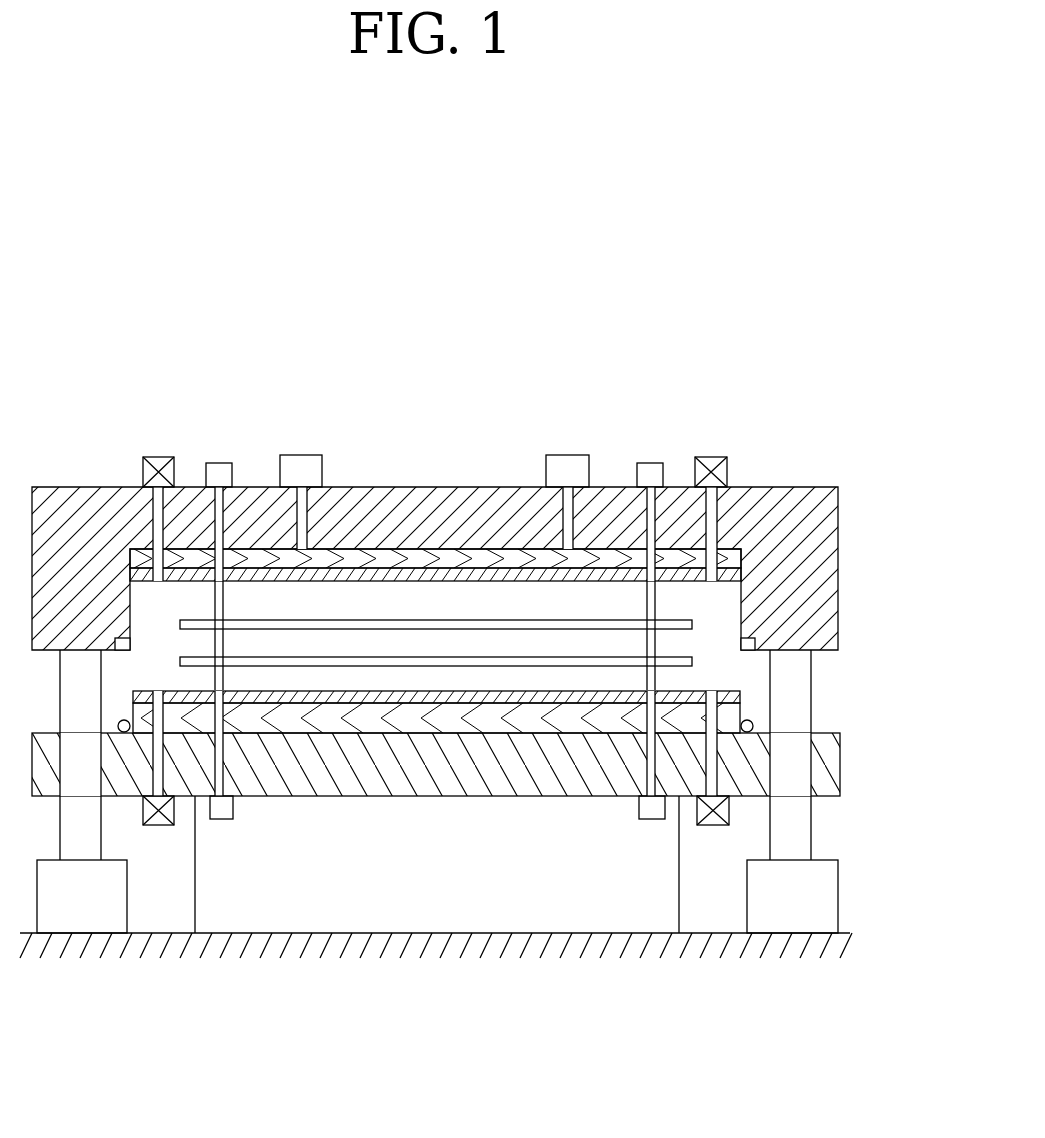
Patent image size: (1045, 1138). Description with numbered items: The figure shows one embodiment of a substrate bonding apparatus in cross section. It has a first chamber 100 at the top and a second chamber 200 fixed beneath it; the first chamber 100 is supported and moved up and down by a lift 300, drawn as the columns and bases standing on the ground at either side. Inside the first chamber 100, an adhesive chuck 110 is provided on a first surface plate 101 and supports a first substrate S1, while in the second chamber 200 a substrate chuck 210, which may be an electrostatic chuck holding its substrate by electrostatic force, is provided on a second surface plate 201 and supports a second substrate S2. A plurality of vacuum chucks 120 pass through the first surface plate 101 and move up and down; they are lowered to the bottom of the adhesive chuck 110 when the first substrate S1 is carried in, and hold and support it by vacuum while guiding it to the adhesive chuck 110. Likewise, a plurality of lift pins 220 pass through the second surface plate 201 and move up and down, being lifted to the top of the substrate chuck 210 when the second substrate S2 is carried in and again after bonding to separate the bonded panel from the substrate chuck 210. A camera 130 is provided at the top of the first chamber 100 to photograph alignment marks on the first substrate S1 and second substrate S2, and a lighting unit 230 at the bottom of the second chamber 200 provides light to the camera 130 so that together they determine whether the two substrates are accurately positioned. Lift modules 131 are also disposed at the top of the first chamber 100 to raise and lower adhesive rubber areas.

The first chamber 100 is at (815, 516).
The first surface plate 101 is at (625, 558).
The adhesive chuck 110 is at (730, 573).
The vacuum chucks 120 is at (222, 512).
The camera 130 is at (155, 458).
The lift modules 131 is at (305, 460).
The second chamber 200 is at (826, 752).
The second surface plate 201 is at (615, 710).
The substrate chuck 210 is at (735, 690).
The lift pins 220 is at (225, 755).
The lighting unit 230 is at (162, 821).
The lift 300 is at (811, 882).
The first substrate S1 is at (423, 624).
The second substrate S2 is at (424, 664).